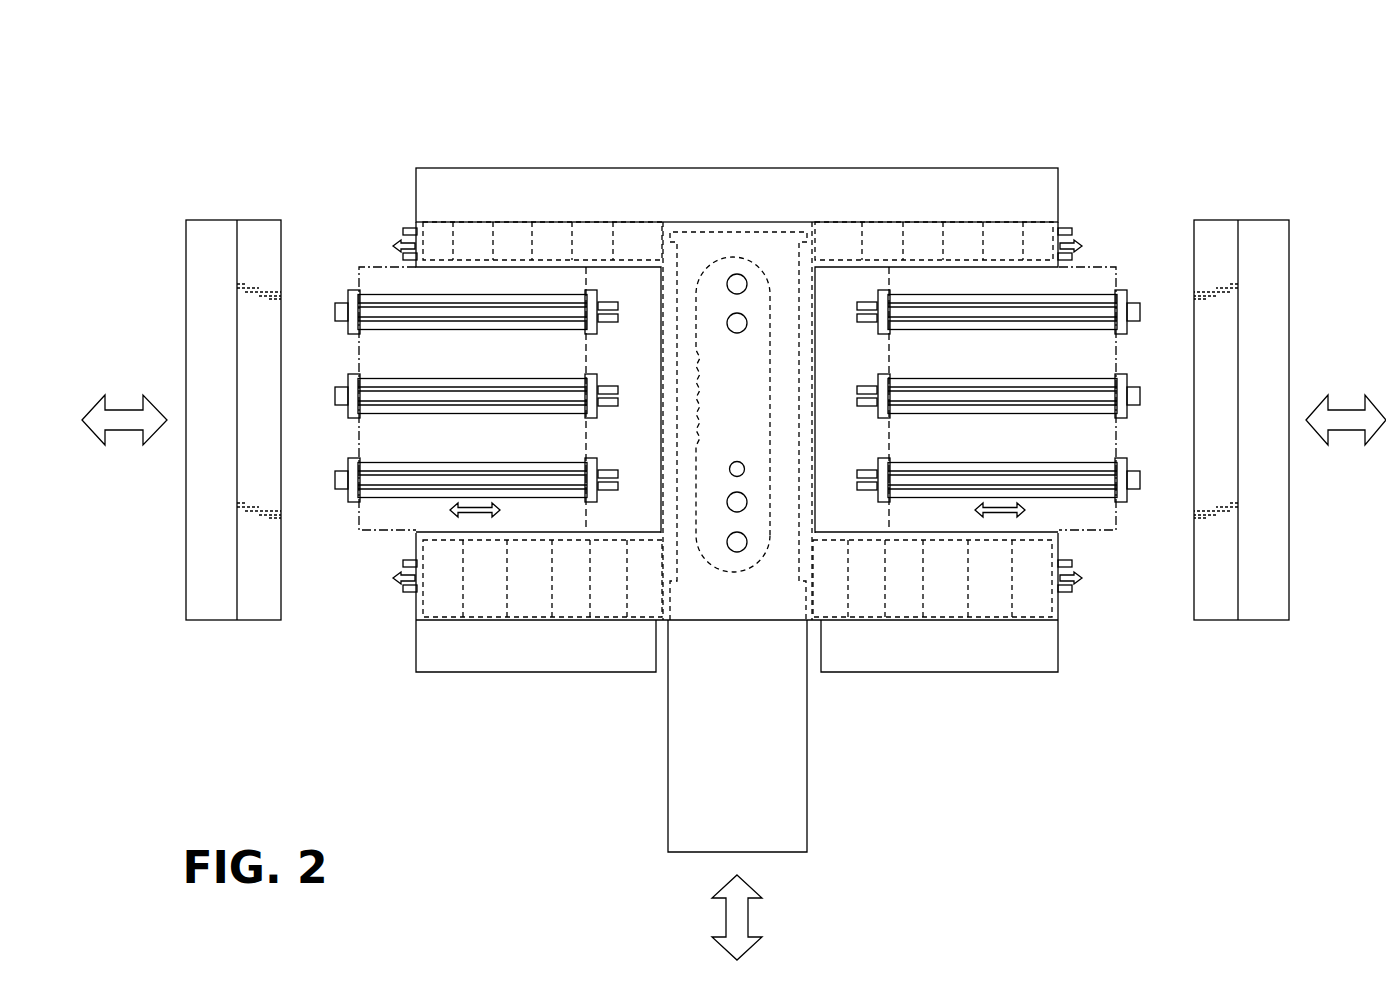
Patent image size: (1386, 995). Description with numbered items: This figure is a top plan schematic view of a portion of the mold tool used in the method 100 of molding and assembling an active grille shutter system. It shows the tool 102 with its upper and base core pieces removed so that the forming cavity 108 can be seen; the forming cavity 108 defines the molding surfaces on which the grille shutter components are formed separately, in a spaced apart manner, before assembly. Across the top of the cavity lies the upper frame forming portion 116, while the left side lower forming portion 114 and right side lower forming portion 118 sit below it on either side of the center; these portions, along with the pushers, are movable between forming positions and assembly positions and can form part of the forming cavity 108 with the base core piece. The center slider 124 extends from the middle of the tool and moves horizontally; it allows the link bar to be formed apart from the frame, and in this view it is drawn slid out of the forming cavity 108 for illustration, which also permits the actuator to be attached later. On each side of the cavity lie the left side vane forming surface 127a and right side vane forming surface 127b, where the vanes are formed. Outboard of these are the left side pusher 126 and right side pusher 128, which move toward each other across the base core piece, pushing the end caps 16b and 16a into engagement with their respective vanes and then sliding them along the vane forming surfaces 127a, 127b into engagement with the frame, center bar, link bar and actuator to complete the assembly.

The method 100 is at (1252, 108).
The tool 102 is at (310, 152).
The forming cavity 108 is at (1106, 246).
The left side lower forming portion 114 is at (523, 652).
The upper frame forming portion 116 is at (724, 202).
The right side lower forming portion 118 is at (924, 652).
The center slider 124 is at (765, 805).
The left side pusher 126 is at (198, 429).
The right side pusher 128 is at (1248, 429).
The end cap 16a is at (1219, 230).
The end cap 16b is at (262, 232).
The left side vane forming surface 127a is at (357, 508).
The right side vane forming surface 127b is at (1118, 508).